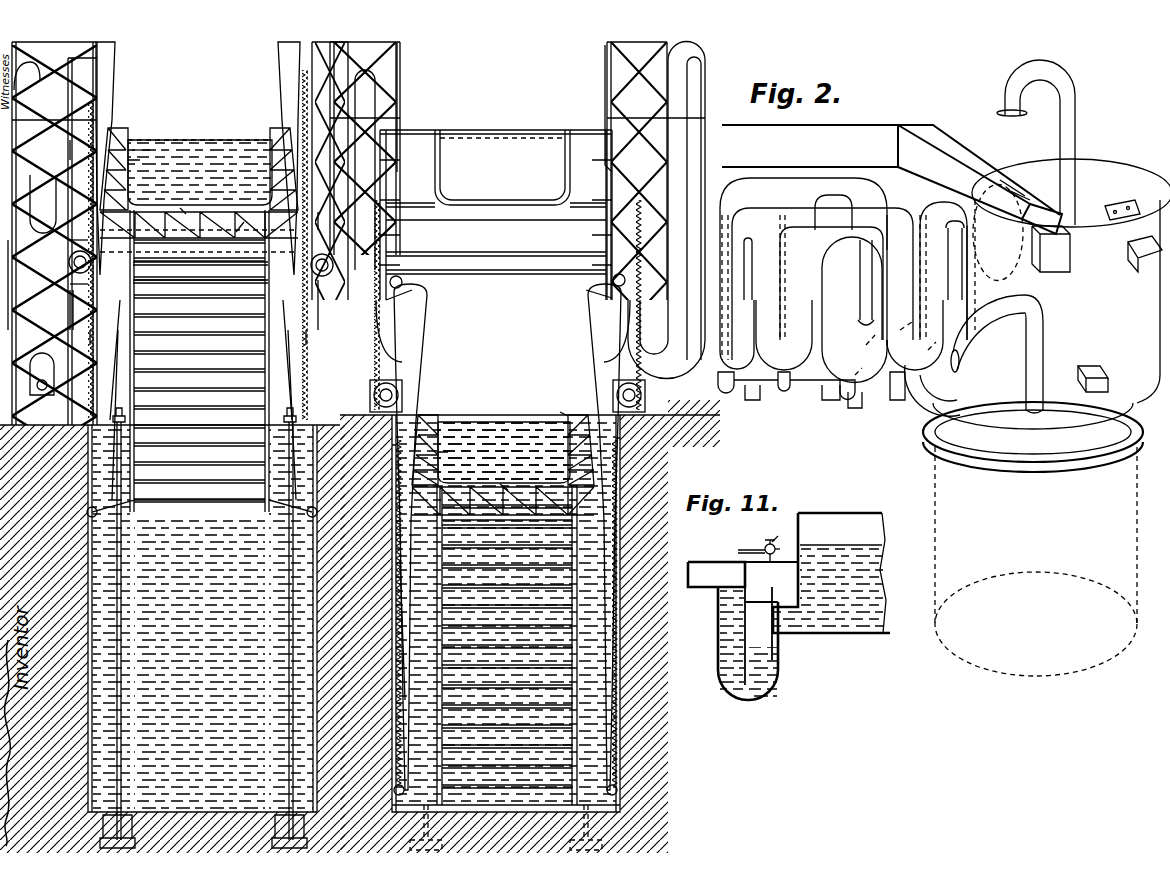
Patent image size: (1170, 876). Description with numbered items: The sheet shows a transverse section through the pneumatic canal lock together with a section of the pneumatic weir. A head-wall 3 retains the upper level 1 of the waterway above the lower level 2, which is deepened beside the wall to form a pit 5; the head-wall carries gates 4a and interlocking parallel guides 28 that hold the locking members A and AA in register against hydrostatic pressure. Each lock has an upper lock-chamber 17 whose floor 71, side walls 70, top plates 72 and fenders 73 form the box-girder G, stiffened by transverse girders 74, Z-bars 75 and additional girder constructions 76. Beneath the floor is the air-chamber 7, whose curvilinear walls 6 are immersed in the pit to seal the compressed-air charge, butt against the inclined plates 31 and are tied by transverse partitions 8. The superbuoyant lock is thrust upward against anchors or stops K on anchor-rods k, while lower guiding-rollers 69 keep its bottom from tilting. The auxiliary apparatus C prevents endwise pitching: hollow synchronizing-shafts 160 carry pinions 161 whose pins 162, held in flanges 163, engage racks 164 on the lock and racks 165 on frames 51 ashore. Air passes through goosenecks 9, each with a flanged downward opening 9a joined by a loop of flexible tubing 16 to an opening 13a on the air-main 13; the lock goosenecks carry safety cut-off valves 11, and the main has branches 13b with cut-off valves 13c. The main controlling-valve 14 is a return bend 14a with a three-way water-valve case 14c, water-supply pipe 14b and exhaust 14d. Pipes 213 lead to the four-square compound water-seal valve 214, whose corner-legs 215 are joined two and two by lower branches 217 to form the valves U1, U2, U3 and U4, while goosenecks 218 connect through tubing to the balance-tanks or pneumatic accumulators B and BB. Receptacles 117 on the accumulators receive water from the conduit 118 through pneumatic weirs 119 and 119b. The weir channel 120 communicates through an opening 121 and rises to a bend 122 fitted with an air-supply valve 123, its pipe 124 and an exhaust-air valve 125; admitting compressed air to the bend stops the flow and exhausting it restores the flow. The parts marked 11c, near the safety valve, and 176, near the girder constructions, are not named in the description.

In FIG. 2, the upper level 1 is at (200, 132).
In FIG. 2, the lower level 2 is at (360, 414).
In FIG. 2, the head-wall 3 is at (496, 232).
In FIG. 2, the gates 4a is at (502, 167).
In FIG. 2, the pit 5 is at (354, 617).
In FIG. 2, the curvilinear outer walls 6 is at (357, 487).
In FIG. 2, the lower air-chamber 7 is at (289, 331).
In FIG. 2, the transverse partitions or ties 8 is at (353, 459).
In FIG. 2, the gooseneck 9 is at (585, 416).
In FIG. 2, the flanged downward opening 9a is at (505, 331).
In FIG. 2, the safety cut-off valve 11 is at (512, 280).
In FIG. 2, the roller arm 11c is at (503, 299).
In FIG. 2, the air-main 13 is at (649, 269).
In FIG. 2, the opening on the air-main 13a is at (377, 240).
In FIG. 2, the branch 13b is at (364, 208).
In FIG. 2, the cut-off valve 13c is at (43, 285).
In FIG. 2, the main controlling-valve 14 is at (766, 304).
In FIG. 2, the return bend 14a is at (853, 277).
In FIG. 2, the water-supply pipe 14b is at (787, 375).
In FIG. 2, the three-way water-valve case 14c is at (811, 396).
In FIG. 2, the exhaust 14d is at (749, 400).
In FIG. 2, the flexible tubing loop 16 is at (503, 233).
In FIG. 2, the lock-chamber 17 is at (349, 311).
In FIG. 2, the interlocking parallel guides 28 is at (496, 192).
In FIG. 2, the inclined plates 31 is at (199, 218).
In FIG. 2, the frames 51 is at (307, 186).
In FIG. 2, the lower guiding-rollers 69 is at (352, 648).
In FIG. 2, the side walls 70 is at (292, 307).
In FIG. 2, the floor 71 is at (338, 341).
In FIG. 2, the top plates 72 is at (347, 297).
In FIG. 2, the fenders 73 is at (142, 151).
In FIG. 2, the transverse girders 74 is at (347, 378).
In FIG. 2, the Z-bars 75 is at (249, 223).
In FIG. 2, the additional girder constructions 76 is at (355, 515).
In FIG. 2, the receptacle 117 is at (1037, 294).
In FIG. 2, the conduit 118 is at (892, 179).
In FIG. 11, the conduit 118 is at (831, 573).
In FIG. 2, the pneumatic weir 119 is at (1051, 217).
In FIG. 11, the pneumatic weir 119 is at (754, 545).
In FIG. 2, the pneumatic weir 119b is at (1120, 292).
In FIG. 11, the weir channel 120 is at (733, 631).
In FIG. 11, the opening 121 is at (841, 584).
In FIG. 11, the bend 122 is at (771, 582).
In FIG. 2, the air-supply valve 123 is at (1047, 271).
In FIG. 11, the air-supply valve 123 is at (785, 530).
In FIG. 11, the pipe 124 is at (738, 551).
In FIG. 2, the exhaust-air valve 125 is at (1073, 285).
In FIG. 11, the exhaust-air valve 125 is at (789, 549).
In FIG. 2, the synchronizing-shaft 160 is at (507, 396).
In FIG. 2, the pinion 161 is at (353, 316).
In FIG. 2, the pins 162 is at (82, 239).
In FIG. 2, the flanges 163 is at (82, 283).
In FIG. 2, the rack 164 is at (360, 295).
In FIG. 2, the rack 165 is at (240, 350).
In FIG. 2, the guide rod 176 is at (118, 415).
In FIG. 2, the pipes 213 is at (831, 259).
In FIG. 2, the four-square compound water-seal valve 214 is at (905, 216).
In FIG. 2, the vertical corner-legs 215 is at (894, 287).
In FIG. 2, the lower branches 217 is at (873, 392).
In FIG. 2, the gooseneck 218 is at (899, 270).
In FIG. 2, the lock-member A is at (200, 294).
In FIG. 2, the lock-member AA is at (506, 645).
In FIG. 2, the balance-tank or pneumatic accumulator B is at (1066, 293).
In FIG. 2, the balance-tank or pneumatic accumulator BB is at (1033, 539).
In FIG. 2, the auxiliary apparatus C is at (199, 303).
In FIG. 2, the box-girder G is at (554, 409).
In FIG. 2, the anchors or stops K is at (201, 405).
In FIG. 2, the anchor-rods k is at (351, 636).
In FIG. 2, the water-seal valve U1 is at (902, 333).
In FIG. 2, the water-seal valve U2 is at (865, 348).
In FIG. 2, the water-seal valve U3 is at (855, 375).
In FIG. 2, the water-seal valve U4 is at (927, 352).